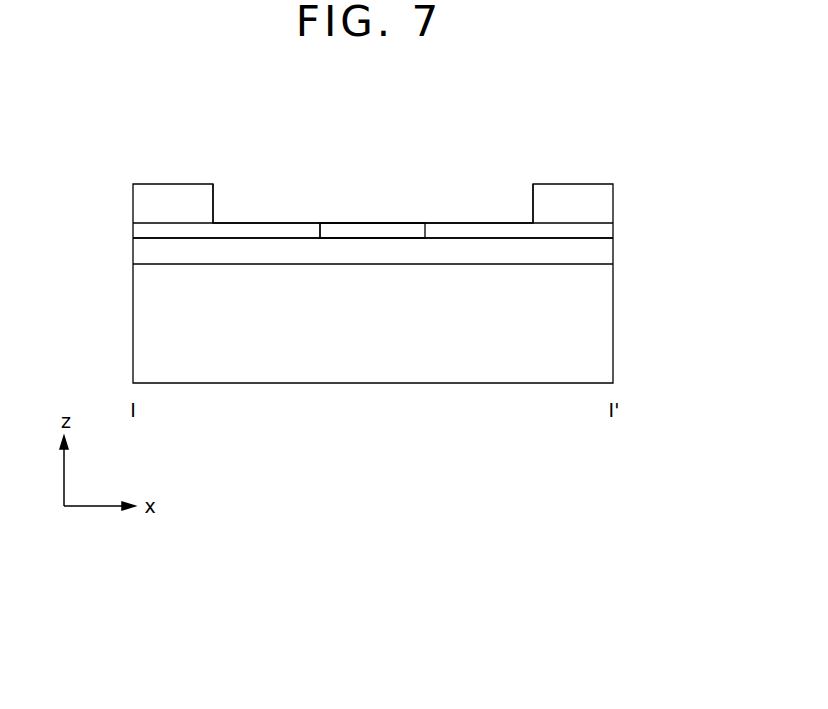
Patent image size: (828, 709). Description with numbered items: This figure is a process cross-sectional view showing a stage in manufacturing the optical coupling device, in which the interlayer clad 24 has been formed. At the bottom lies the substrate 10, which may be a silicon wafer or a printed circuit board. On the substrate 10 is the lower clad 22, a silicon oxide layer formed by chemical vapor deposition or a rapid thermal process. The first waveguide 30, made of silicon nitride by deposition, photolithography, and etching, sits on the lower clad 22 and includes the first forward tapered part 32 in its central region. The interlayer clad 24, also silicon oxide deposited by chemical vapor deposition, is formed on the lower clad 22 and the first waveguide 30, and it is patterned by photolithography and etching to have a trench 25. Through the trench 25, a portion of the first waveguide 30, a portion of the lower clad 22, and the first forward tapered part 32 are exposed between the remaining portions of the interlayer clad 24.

The substrate 10 is at (146, 328).
The lower clad 22 is at (146, 251).
The interlayer clad 24 is at (146, 203).
The trench 25 is at (471, 197).
The first waveguide 30 is at (265, 228).
The first forward tapered part 32 is at (371, 228).